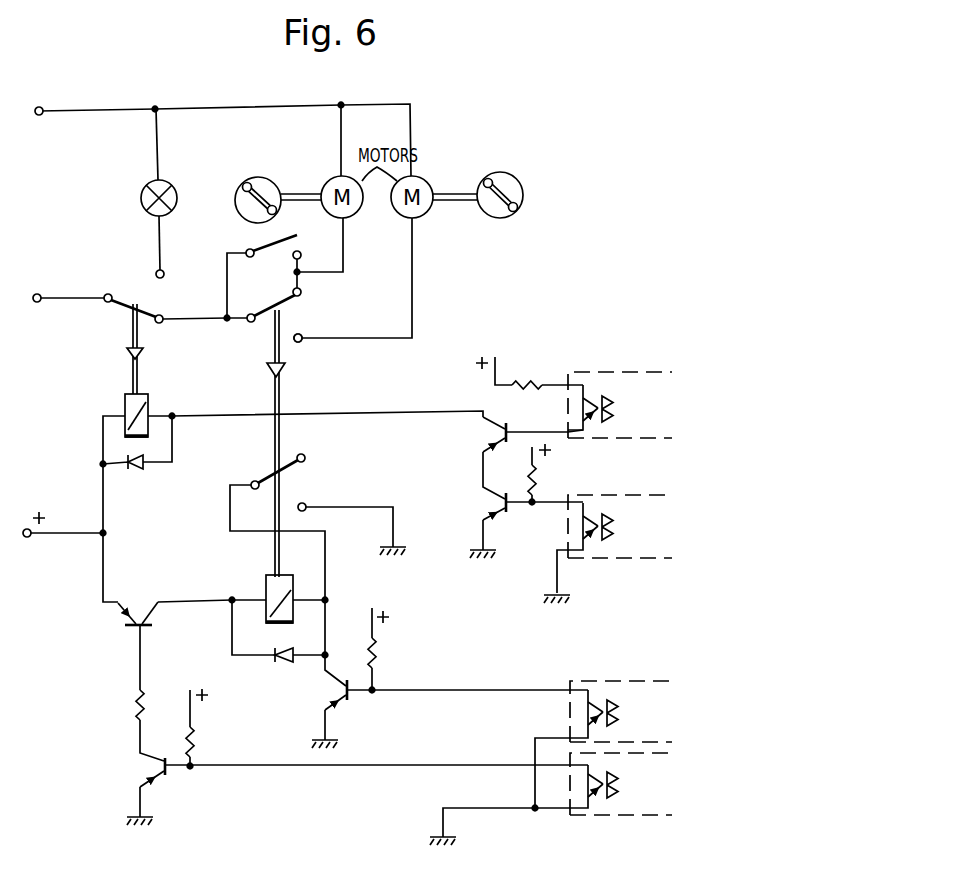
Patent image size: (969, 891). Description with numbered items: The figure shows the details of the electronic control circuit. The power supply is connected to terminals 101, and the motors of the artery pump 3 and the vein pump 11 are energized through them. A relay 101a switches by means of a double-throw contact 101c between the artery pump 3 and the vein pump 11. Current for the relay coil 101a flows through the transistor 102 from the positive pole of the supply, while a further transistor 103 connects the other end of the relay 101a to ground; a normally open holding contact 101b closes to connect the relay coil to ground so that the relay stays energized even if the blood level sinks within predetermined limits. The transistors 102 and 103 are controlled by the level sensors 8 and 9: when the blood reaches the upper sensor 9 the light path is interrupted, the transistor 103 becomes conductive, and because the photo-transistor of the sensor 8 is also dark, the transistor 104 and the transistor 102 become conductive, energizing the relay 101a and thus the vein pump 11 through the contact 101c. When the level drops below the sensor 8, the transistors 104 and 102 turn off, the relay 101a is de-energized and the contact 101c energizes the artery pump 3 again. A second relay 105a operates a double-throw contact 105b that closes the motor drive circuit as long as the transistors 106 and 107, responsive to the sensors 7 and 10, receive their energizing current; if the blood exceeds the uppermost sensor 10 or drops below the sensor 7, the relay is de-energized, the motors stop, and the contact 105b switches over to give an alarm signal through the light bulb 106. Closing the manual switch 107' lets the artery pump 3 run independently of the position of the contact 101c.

The terminals 101 is at (39, 115).
The light bulb 106 is at (307, 316).
The artery pump 3 is at (257, 176).
The vein pump 11 is at (523, 197).
The double-throw contact 105b is at (132, 292).
The manual switch 107' is at (264, 276).
The double-throw contact 101c is at (267, 443).
The relay 105a is at (119, 406).
The holding contact 101b is at (268, 479).
The relay coil 101a is at (260, 591).
The transistor 102 is at (138, 602).
The transistor 103 is at (321, 695).
The transistor 104 is at (170, 783).
The transistor 107 is at (478, 504).
The sensor 10 is at (620, 405).
The sensor 7 is at (614, 544).
The sensor 9 is at (603, 744).
The sensor 8 is at (603, 784).